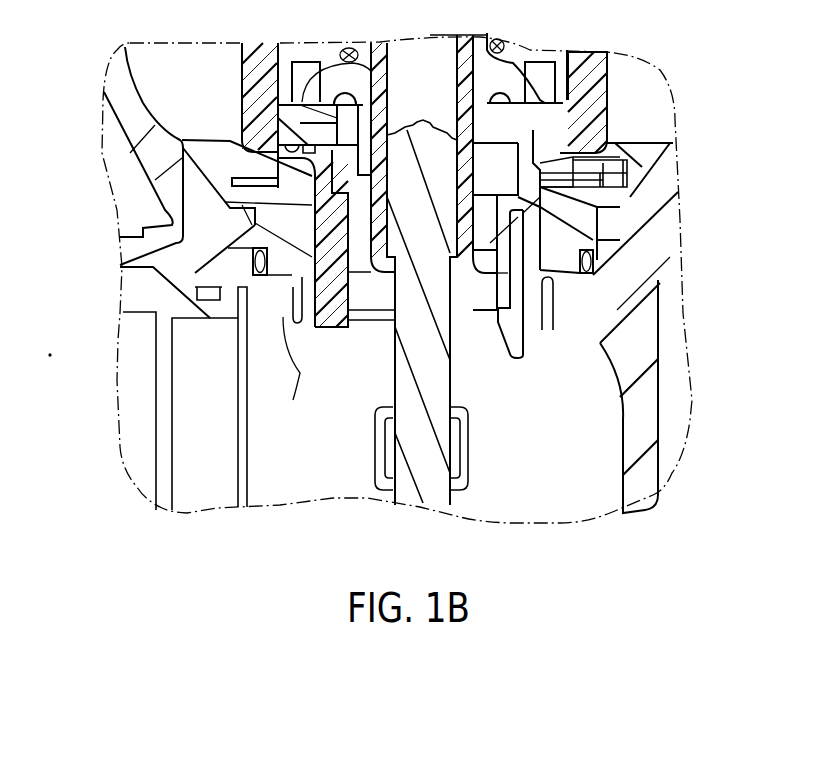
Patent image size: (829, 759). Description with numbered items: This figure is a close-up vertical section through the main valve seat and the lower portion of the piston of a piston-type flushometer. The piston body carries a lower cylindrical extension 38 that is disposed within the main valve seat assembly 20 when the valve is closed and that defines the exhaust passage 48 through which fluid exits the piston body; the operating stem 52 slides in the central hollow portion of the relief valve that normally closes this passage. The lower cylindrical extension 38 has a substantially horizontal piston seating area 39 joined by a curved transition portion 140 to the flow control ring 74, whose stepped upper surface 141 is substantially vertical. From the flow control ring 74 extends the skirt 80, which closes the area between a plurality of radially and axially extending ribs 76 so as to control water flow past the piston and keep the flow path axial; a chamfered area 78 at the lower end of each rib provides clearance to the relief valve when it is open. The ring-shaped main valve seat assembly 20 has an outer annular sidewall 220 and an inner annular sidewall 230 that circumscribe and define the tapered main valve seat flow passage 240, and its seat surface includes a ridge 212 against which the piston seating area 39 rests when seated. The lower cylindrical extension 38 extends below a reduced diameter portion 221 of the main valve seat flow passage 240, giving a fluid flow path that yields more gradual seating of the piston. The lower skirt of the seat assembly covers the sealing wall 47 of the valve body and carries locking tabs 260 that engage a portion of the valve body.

The main valve seat assembly 20 is at (545, 225).
The lower cylindrical extension 38 is at (590, 222).
The piston seating area 39 is at (570, 157).
The sealing wall 47 is at (648, 350).
The exhaust passage 48 is at (460, 307).
The operating stem 52 is at (434, 357).
The flow control ring 74 is at (518, 197).
The ribs 76 is at (527, 362).
The chamfered area 78 is at (343, 330).
The skirt 80 is at (360, 300).
The transition portion 140 is at (518, 140).
The stepped upper surface 141 is at (567, 163).
The ridge 212 is at (243, 155).
The outer annular sidewall 220 is at (283, 258).
The reduced diameter portion 221 is at (230, 198).
The inner annular sidewall 230 is at (465, 322).
The main valve seat flow passage 240 is at (533, 258).
The locking tabs 260 is at (297, 318).